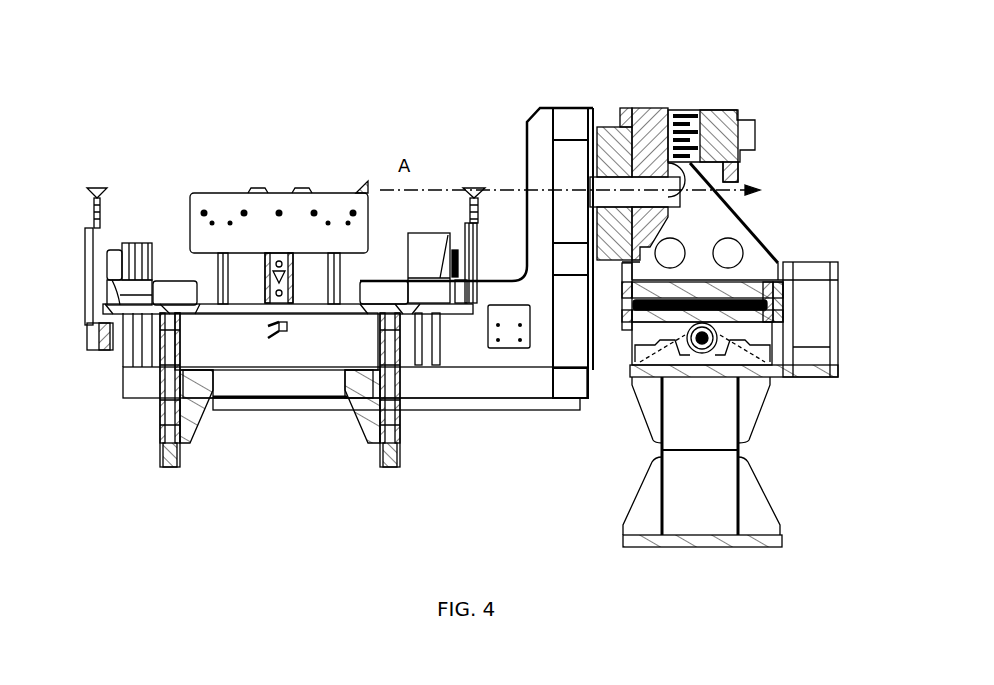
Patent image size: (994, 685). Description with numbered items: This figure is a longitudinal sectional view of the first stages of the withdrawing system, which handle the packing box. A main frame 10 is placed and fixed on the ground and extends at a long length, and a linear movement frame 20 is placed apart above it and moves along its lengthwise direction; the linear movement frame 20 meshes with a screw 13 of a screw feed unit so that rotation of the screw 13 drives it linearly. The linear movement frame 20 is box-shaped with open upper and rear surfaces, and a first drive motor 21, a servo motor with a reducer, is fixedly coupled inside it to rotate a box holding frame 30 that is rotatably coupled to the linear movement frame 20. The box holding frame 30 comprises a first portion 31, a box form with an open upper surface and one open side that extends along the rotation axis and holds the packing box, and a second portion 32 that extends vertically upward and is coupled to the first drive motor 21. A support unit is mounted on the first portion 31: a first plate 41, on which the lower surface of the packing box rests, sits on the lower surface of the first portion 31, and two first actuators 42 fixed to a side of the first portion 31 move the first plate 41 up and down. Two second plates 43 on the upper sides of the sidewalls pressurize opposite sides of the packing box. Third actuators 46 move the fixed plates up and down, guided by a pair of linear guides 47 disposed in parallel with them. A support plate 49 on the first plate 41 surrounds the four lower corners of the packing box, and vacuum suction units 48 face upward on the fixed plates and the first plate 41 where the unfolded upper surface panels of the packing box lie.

The main frame 10 is at (782, 434).
The screw 13 is at (770, 378).
The linear movement frame 20 is at (769, 227).
The first drive motor 21 is at (731, 99).
The box holding frame 30 is at (506, 172).
The first portion 31 is at (459, 380).
The second portion 32 is at (576, 302).
The first plate 41 is at (295, 332).
The first actuators 42 is at (198, 455).
The second plates 43 is at (296, 220).
The third actuators 46 is at (274, 260).
The linear guides 47 is at (206, 272).
The vacuum suction units 48 is at (98, 176).
The support plate 49 is at (181, 294).